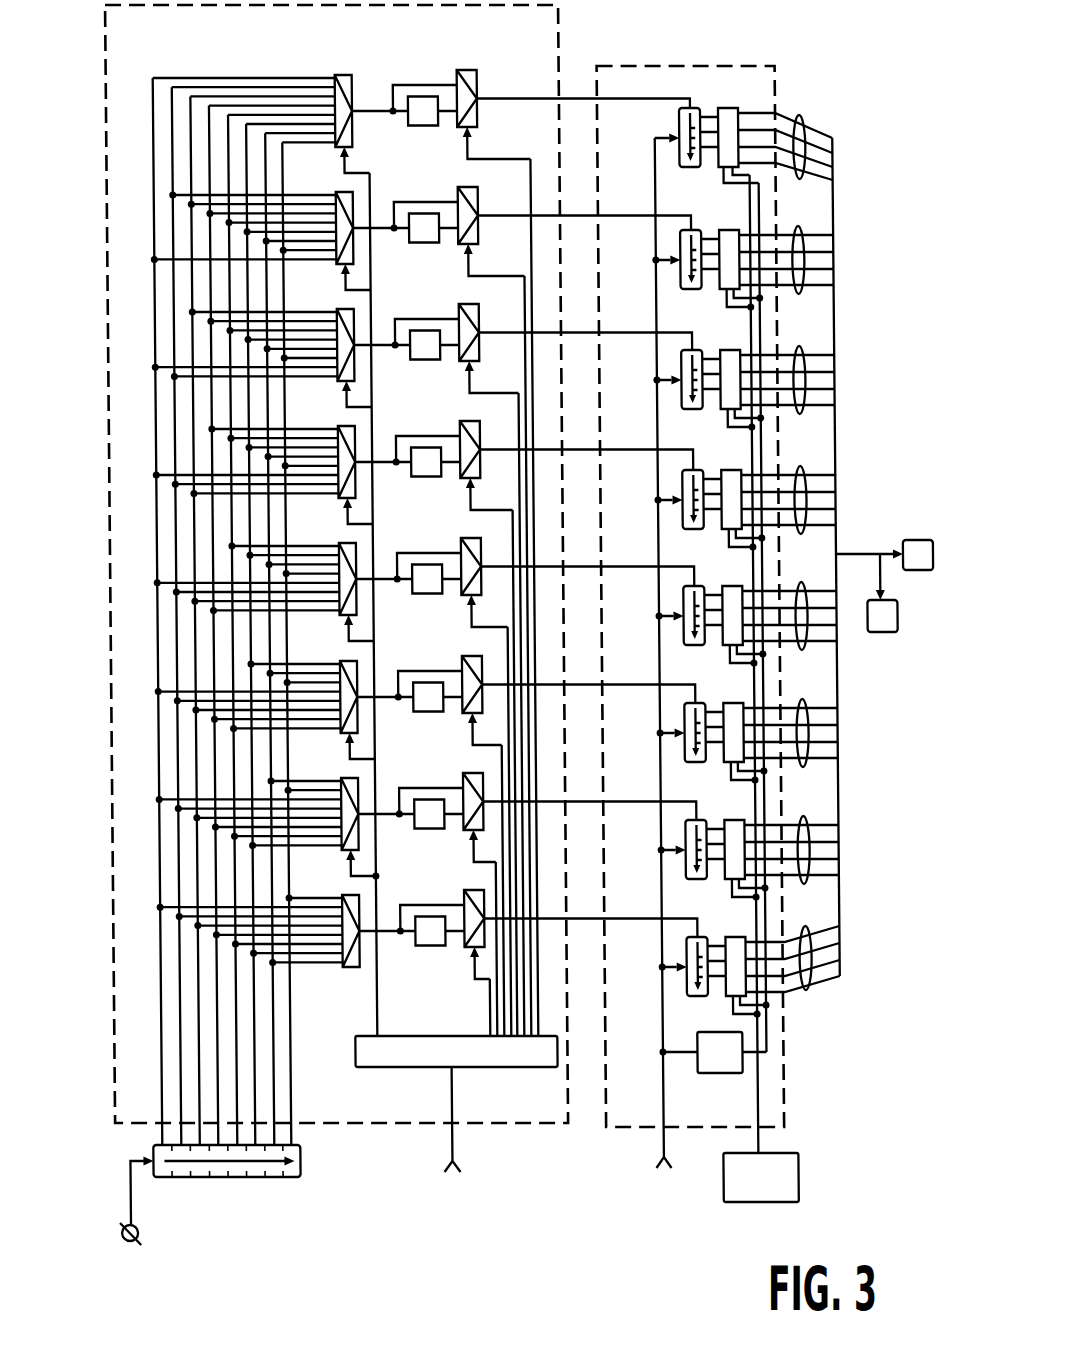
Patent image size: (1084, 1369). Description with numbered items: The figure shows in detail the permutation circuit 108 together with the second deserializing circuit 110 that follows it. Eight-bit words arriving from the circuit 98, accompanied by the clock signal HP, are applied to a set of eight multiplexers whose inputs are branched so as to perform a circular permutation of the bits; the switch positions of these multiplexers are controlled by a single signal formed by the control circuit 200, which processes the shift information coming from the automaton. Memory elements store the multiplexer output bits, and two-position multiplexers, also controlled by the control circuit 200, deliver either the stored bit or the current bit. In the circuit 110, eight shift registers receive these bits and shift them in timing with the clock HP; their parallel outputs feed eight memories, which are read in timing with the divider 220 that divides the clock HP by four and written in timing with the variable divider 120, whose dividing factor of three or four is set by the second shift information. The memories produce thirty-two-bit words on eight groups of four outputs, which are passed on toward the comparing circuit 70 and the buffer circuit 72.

The permutation circuit 108 is at (558, 47).
The second deserializing circuit 110 is at (715, 66).
The buffer circuit 72 is at (912, 540).
The comparing circuit 70 is at (888, 632).
The control circuit 200 is at (402, 1068).
The deserializing circuit 98 is at (290, 1177).
The divider 220 is at (720, 1073).
The variable divider 120 is at (788, 1177).